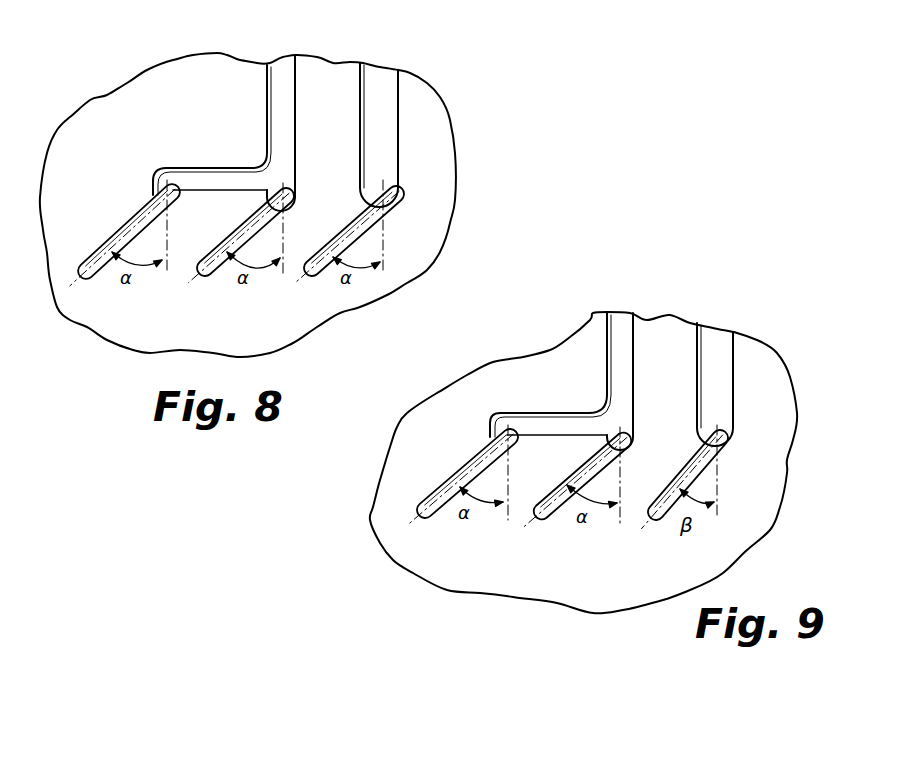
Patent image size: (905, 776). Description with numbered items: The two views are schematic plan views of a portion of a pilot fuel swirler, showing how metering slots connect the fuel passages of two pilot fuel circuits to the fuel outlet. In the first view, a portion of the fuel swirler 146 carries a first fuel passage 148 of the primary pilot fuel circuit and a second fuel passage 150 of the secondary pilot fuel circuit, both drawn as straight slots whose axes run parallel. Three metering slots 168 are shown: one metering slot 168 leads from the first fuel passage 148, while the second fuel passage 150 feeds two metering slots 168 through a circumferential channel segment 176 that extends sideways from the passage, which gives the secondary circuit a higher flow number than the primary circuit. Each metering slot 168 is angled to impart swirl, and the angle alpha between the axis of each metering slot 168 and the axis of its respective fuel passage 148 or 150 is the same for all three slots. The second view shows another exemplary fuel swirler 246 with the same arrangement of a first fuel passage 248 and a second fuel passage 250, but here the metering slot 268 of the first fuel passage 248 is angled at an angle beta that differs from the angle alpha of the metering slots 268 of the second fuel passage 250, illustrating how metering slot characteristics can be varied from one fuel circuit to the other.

In FIG. 8, the fuel swirler 146 is at (114, 110).
In FIG. 8, the first fuel passage 148 is at (380, 83).
In FIG. 8, the second fuel passage 150 is at (278, 90).
In FIG. 8, the circumferential channel segment 176 is at (202, 173).
In FIG. 8, the metering slot 168 is at (123, 224).
In FIG. 9, the fuel swirler 246 is at (481, 386).
In FIG. 9, the first fuel passage 248 is at (715, 342).
In FIG. 9, the second fuel passage 250 is at (622, 323).
In FIG. 9, the metering slot 268 is at (450, 473).